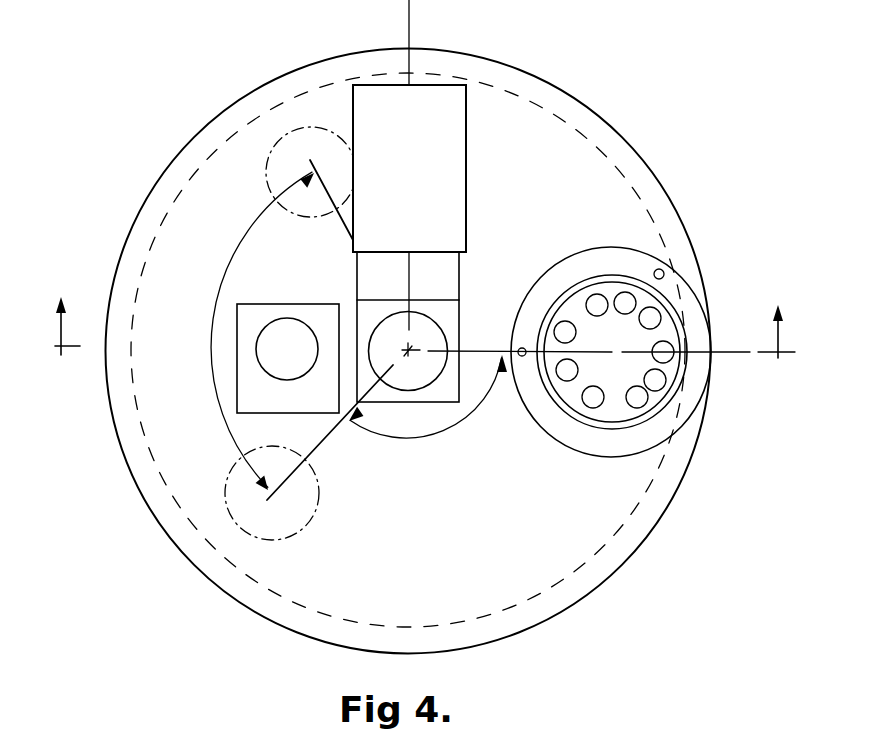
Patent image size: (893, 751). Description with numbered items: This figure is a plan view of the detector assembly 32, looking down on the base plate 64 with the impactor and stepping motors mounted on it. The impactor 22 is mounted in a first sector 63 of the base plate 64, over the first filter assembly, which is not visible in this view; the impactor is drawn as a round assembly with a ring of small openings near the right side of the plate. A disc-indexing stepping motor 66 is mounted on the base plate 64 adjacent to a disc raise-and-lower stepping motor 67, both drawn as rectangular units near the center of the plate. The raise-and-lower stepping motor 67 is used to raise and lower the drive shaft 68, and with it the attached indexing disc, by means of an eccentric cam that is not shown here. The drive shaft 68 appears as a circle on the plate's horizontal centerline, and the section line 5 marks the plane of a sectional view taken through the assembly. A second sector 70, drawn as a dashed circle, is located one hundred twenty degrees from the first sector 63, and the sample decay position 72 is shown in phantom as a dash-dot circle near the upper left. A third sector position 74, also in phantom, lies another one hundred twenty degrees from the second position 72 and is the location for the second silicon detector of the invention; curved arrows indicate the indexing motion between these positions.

The section line 5- 5 is at (419, 341).
The impactor 22 is at (635, 352).
The detector assembly 32 is at (718, 136).
The first sector 63 is at (710, 383).
The base plate 64 is at (552, 560).
The disc-indexing stepping motor 66 is at (288, 358).
The disc raise-and-lower stepping motor 67 is at (409, 126).
The drive shaft 68 is at (408, 327).
The second sector 70 is at (245, 88).
The sample decay position 72 is at (320, 125).
The third sector position 74 is at (228, 515).